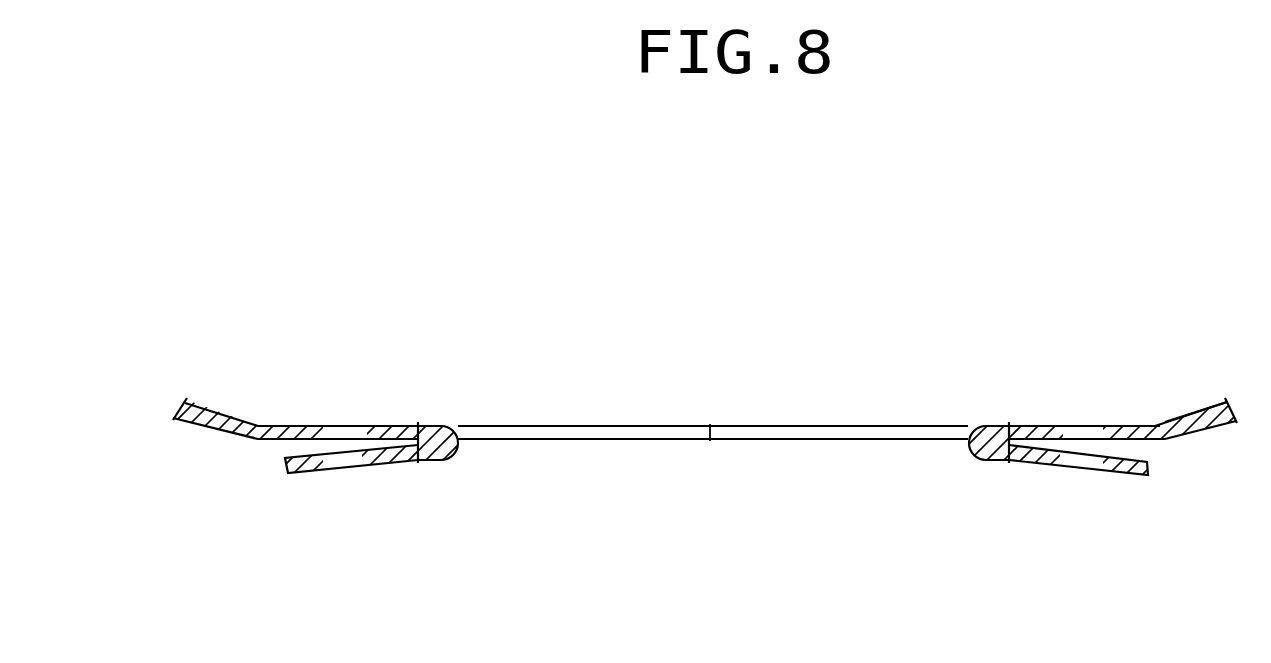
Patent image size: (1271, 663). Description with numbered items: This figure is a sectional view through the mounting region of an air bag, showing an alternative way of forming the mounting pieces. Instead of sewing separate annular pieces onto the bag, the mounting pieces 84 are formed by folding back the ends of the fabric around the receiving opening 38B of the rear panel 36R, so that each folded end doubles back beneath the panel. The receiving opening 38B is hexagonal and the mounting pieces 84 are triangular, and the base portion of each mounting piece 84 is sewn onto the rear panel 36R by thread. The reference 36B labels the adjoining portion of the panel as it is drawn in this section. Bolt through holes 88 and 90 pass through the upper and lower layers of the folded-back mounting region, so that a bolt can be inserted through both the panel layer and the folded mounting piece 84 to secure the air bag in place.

The rear panel 36R is at (1133, 398).
The bent flange of side panel 36B is at (1178, 393).
The receiving opening 38B is at (508, 425).
The mounting piece 84 is at (296, 474).
The bolt through hole 88 is at (338, 425).
The bolt through hole 90 is at (348, 465).